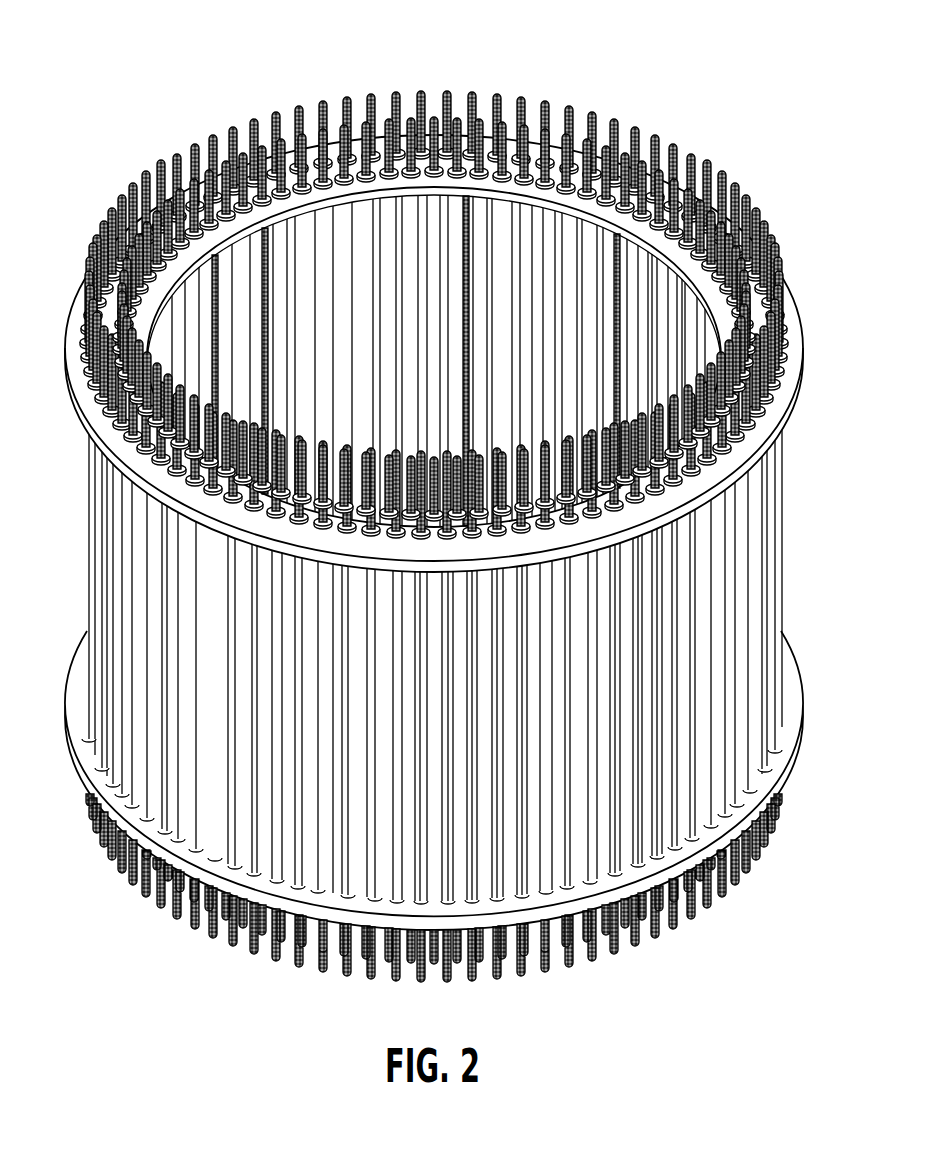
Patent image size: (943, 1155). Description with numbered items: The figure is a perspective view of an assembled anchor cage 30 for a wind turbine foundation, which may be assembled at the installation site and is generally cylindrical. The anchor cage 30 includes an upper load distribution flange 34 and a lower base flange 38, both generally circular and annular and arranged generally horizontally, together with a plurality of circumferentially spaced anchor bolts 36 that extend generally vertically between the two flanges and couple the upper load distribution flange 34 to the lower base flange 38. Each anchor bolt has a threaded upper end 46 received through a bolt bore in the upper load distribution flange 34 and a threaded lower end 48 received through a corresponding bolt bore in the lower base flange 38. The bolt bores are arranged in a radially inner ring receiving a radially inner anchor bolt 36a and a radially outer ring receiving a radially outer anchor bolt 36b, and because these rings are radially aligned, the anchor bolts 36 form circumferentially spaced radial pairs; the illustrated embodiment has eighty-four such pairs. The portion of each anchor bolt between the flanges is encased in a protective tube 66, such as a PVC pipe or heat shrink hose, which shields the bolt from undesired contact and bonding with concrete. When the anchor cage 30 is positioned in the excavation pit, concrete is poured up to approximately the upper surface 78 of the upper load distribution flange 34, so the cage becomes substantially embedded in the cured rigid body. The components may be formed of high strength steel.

The anchor cage 30 is at (146, 54).
The upper load distribution flange 34 is at (66, 362).
The anchor bolts 36 is at (450, 296).
The radially inner anchor bolt 36a is at (302, 124).
The radially outer anchor bolt 36b is at (185, 150).
The lower base flange 38 is at (66, 745).
The threaded upper end 46 is at (110, 225).
The threaded lower end 48 is at (185, 912).
The protective tube 66 is at (186, 544).
The upper surface 78 is at (789, 306).